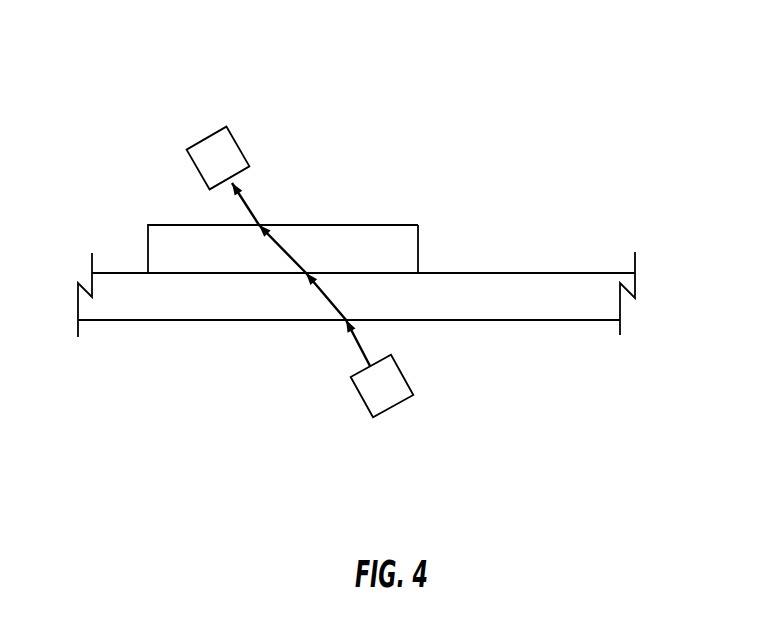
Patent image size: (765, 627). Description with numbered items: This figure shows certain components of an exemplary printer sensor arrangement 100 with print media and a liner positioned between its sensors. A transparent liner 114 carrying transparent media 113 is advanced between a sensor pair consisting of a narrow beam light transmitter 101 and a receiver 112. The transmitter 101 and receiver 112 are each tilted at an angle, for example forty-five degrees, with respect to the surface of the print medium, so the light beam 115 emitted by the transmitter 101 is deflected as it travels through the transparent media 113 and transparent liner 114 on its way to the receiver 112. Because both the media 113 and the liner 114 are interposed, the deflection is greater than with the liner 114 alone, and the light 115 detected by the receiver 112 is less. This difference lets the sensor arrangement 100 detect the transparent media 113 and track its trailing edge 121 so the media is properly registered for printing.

The sensor arrangement 100 is at (476, 57).
The narrow beam light transmitter 101 is at (398, 406).
The receiver 112 is at (198, 138).
The transparent media 113 is at (177, 237).
The transparent liner 114 is at (148, 302).
The light beam 115 is at (360, 350).
The trailing edge 121 is at (438, 247).